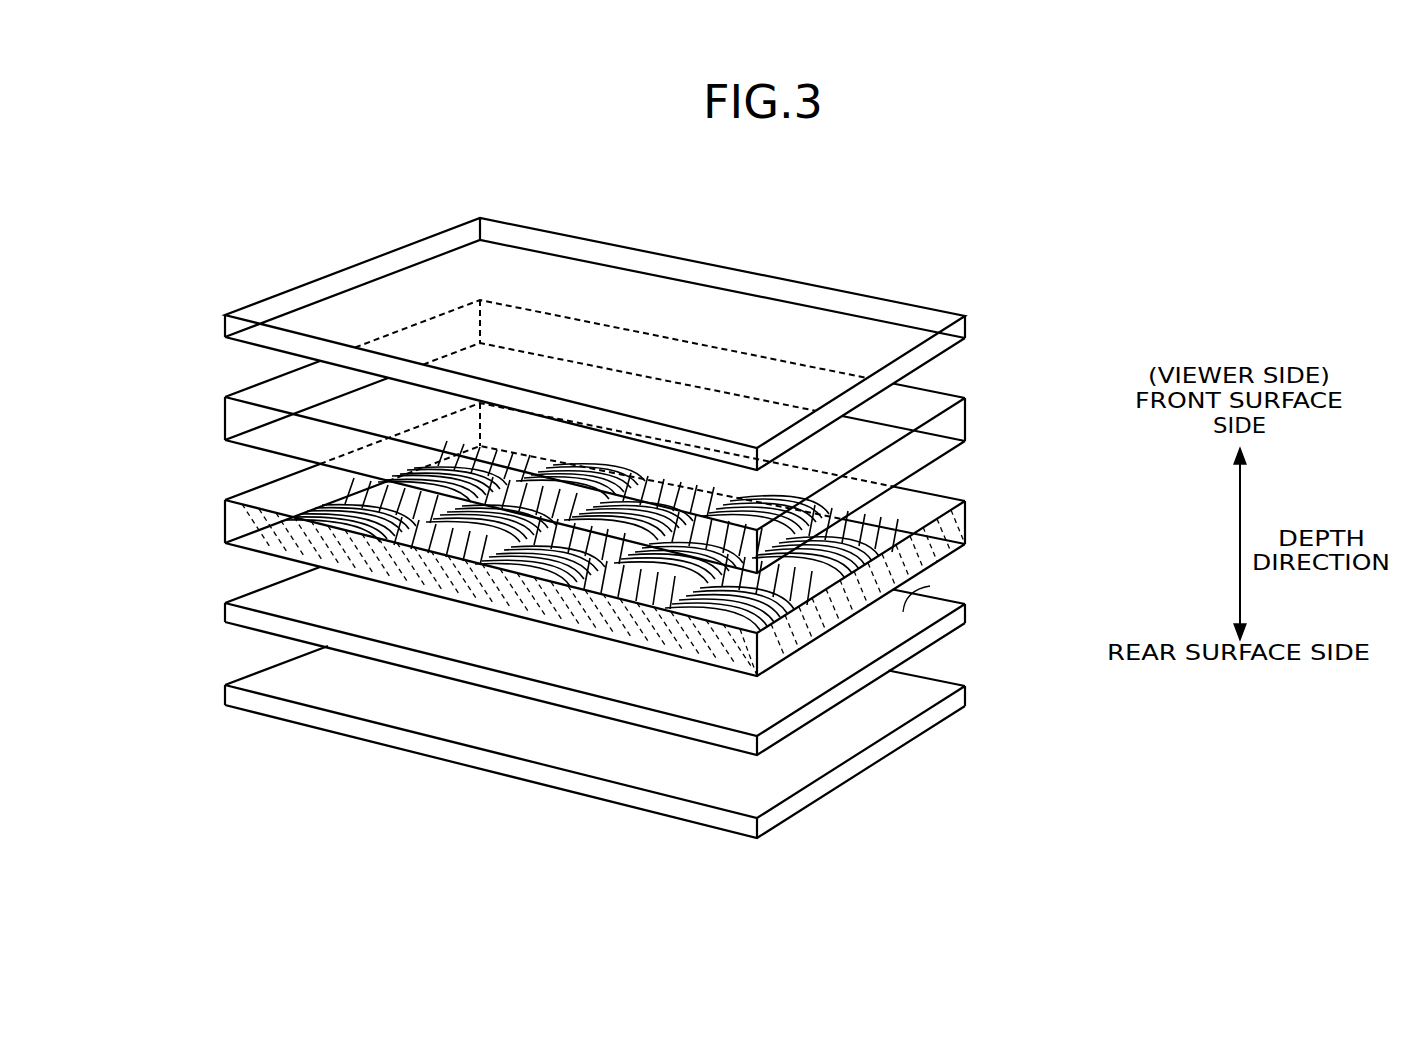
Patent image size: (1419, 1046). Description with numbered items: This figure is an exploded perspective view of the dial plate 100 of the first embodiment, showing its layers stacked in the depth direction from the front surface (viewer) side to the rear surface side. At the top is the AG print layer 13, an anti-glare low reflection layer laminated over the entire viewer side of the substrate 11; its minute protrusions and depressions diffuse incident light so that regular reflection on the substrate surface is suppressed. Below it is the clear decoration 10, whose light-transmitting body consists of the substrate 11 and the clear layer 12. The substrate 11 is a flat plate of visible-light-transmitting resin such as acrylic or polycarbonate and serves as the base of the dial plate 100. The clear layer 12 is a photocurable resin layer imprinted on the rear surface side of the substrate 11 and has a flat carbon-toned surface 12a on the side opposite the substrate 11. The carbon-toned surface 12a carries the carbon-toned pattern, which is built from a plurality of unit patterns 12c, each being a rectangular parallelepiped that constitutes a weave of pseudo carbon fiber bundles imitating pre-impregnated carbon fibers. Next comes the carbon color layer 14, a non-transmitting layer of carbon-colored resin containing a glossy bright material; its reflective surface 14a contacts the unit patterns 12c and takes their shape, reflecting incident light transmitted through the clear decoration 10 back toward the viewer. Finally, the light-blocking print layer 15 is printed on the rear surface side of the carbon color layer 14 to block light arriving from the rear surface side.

The dial plate 100 is at (757, 224).
The AG print layer 13 is at (967, 324).
The substrate 11 is at (967, 414).
The clear layer 12 is at (605, 539).
The clear decoration 10 is at (1040, 372).
The carbon-toned surface 12a is at (900, 570).
The unit pattern 12c is at (360, 490).
The carbon color layer 14 is at (645, 660).
The reflective surface 14a is at (897, 605).
The light-blocking print layer 15 is at (967, 679).